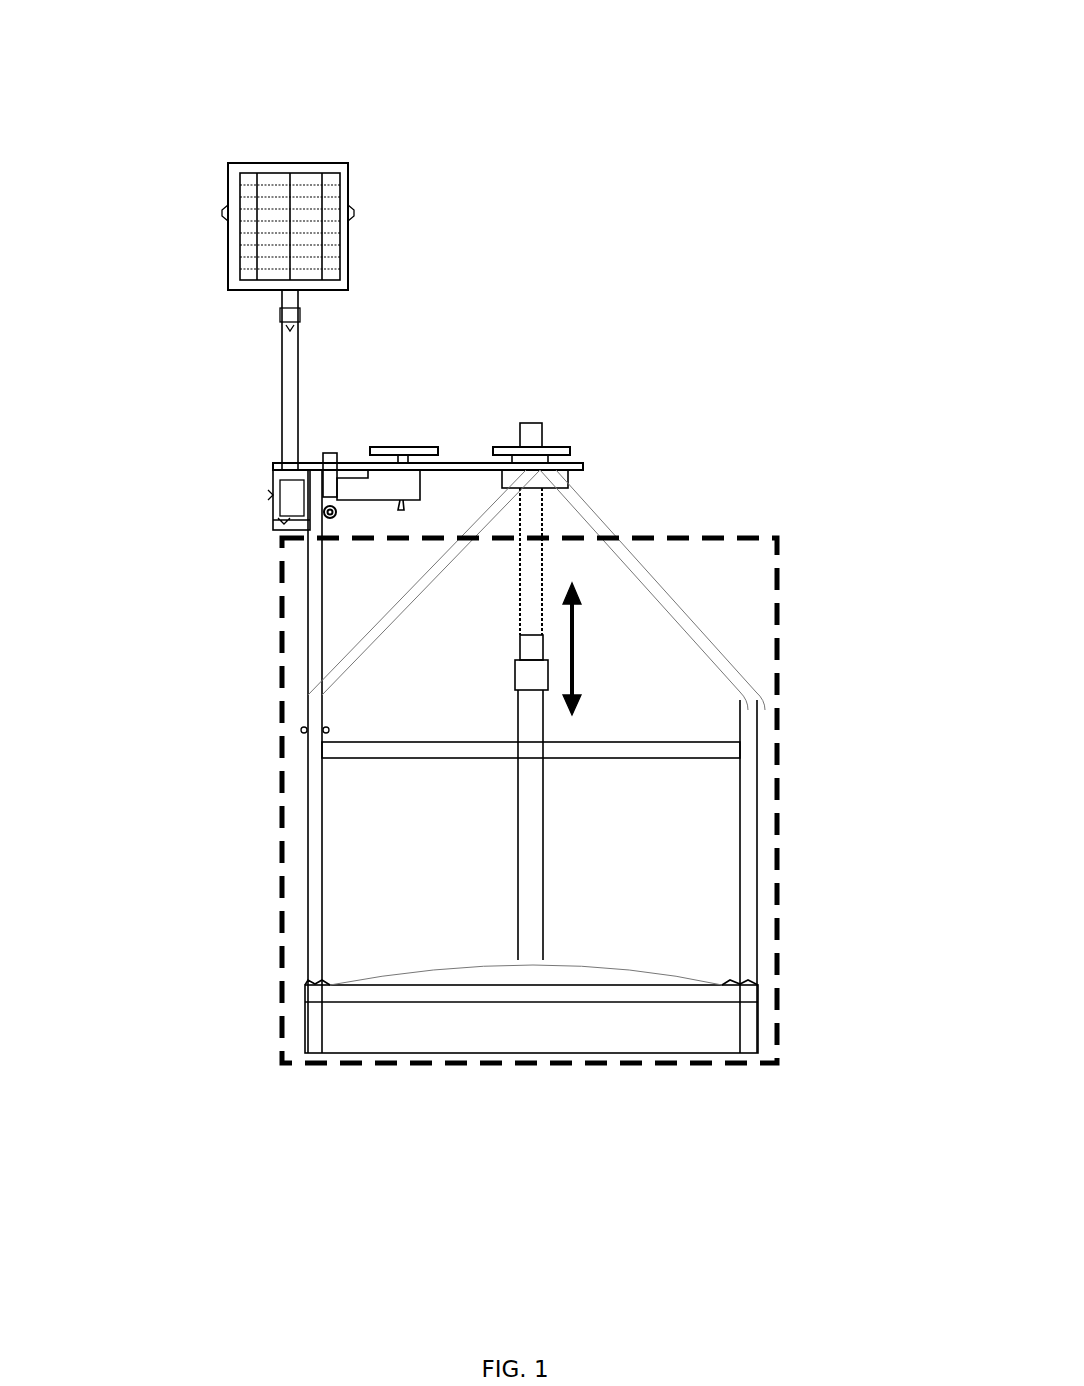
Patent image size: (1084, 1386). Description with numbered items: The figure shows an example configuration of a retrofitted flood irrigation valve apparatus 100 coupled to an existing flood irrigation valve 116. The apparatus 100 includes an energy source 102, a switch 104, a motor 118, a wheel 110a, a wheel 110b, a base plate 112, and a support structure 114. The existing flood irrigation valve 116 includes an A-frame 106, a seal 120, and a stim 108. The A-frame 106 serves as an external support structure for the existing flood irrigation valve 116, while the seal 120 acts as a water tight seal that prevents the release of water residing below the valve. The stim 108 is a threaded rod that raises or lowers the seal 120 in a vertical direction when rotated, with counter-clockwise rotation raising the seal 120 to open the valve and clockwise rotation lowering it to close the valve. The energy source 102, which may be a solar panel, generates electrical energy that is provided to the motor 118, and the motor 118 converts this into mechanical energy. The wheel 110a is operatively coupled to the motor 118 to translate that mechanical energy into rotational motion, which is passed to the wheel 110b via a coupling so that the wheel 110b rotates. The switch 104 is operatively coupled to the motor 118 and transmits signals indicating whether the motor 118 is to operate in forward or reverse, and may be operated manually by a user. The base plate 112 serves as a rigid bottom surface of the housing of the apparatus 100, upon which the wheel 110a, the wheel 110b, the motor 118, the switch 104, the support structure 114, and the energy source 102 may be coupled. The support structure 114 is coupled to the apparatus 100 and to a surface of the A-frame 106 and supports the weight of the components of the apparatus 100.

The retrofitted flood irrigation valve apparatus 100 is at (156, 52).
The energy source 102 is at (214, 184).
The switch 104 is at (249, 482).
The A-frame 106 is at (294, 705).
The stim 108 is at (564, 539).
The wheel 110a is at (445, 428).
The wheel 110b is at (592, 436).
The base plate 112 is at (604, 462).
The support structure 114 is at (289, 623).
The existing flood irrigation valve 116 is at (477, 1078).
The motor 118 is at (356, 453).
The seal 120 is at (716, 968).